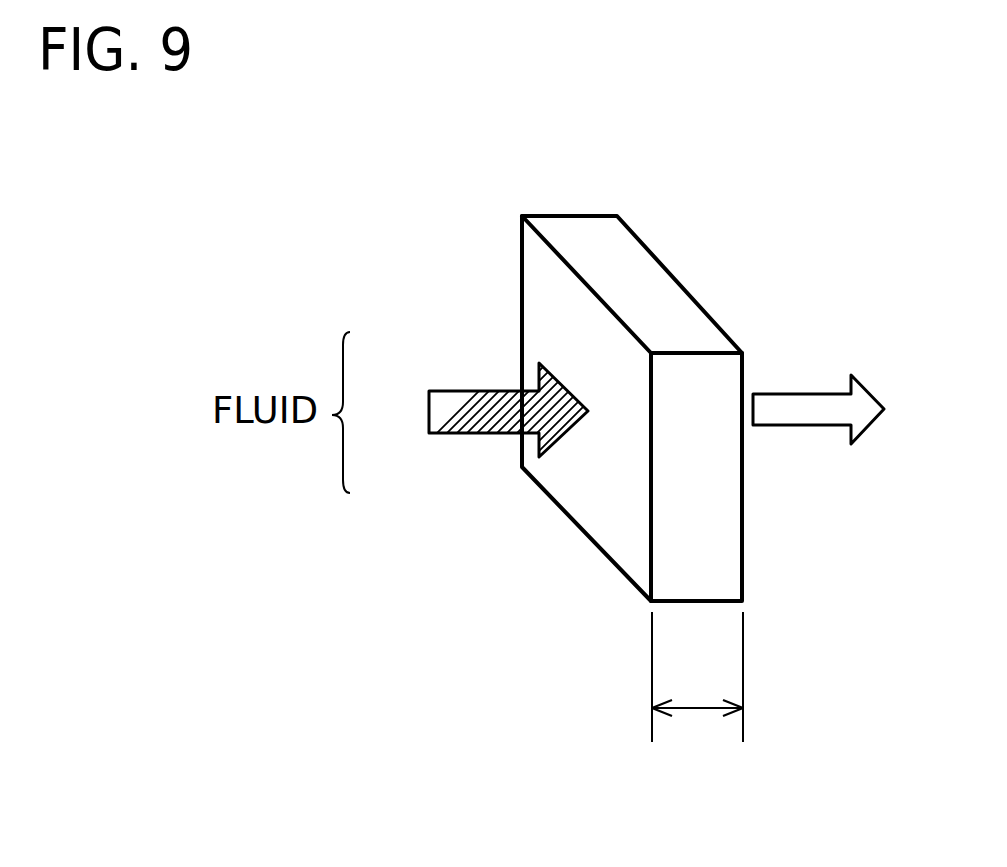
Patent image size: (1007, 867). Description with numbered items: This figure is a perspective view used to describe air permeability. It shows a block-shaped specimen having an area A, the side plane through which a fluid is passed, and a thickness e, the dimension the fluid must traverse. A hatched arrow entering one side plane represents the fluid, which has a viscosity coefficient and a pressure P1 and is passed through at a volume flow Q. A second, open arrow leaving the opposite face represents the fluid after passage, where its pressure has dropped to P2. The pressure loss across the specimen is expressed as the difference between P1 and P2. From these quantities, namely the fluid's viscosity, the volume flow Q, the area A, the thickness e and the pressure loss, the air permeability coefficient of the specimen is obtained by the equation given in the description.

The area A is at (548, 295).
The pressure P1 is at (526, 408).
The volume flow Q is at (376, 457).
The pressure after passage P2 is at (831, 389).
The thickness e is at (697, 677).